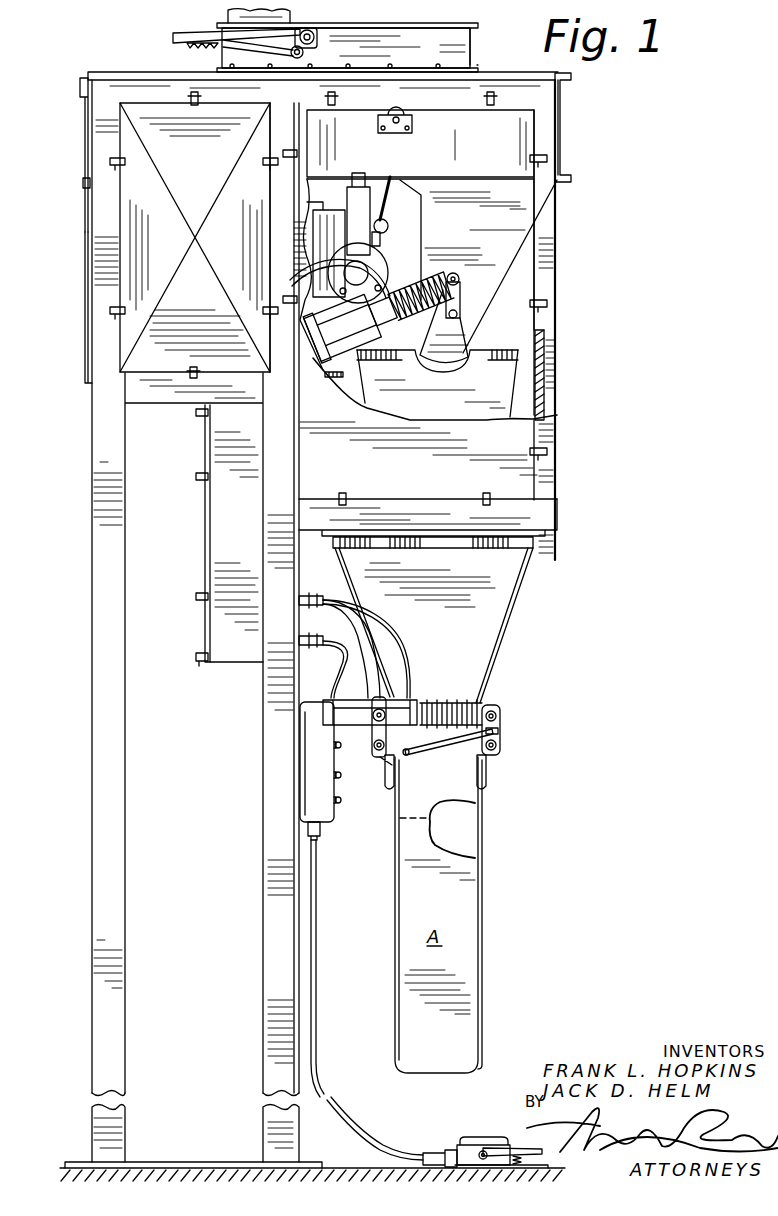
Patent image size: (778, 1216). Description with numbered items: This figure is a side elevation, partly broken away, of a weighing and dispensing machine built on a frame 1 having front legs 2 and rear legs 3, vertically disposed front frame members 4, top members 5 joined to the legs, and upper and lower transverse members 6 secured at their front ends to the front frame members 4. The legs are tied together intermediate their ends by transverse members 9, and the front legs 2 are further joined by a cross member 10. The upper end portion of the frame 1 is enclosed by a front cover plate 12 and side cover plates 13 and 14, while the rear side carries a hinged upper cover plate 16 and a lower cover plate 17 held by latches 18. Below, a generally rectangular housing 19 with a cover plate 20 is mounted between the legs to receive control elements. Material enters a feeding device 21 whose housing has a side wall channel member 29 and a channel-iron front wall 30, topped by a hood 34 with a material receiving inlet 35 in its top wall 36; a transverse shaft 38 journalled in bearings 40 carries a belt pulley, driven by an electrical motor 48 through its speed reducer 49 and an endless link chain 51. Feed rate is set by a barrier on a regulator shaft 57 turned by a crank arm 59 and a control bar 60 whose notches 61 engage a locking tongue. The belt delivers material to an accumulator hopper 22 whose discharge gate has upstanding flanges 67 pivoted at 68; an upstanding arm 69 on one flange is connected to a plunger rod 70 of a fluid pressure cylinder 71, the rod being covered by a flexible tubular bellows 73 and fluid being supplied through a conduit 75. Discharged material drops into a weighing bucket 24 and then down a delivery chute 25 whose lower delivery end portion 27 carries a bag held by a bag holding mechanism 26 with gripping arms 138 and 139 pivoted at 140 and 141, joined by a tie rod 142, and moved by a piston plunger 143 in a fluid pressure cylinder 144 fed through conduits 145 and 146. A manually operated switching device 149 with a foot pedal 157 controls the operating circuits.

The frame 1 is at (349, 586).
The front legs 2 is at (325, 931).
The rear legs 3 is at (193, 815).
The front frame members 4 is at (569, 305).
The top member 5 is at (323, 65).
The transverse members 6 is at (449, 517).
The transverse members 9 is at (212, 767).
The cross member 10 is at (330, 394).
The front cover plate 12 is at (568, 375).
The side cover plate 13 is at (428, 460).
The side cover plate 14 is at (195, 237).
The upper cover plate 16 is at (76, 155).
The lower cover plate 17 is at (76, 307).
The latches 18 is at (323, 381).
The housing 19 is at (211, 533).
The cover plate 20 is at (183, 533).
The feeding device 21 is at (372, 44).
The accumulator hopper 22 is at (446, 297).
The weighing bucket 24 is at (435, 400).
The delivery chute 25 is at (442, 620).
The bag holding mechanism 26 is at (527, 729).
The lower delivery end portion 27 is at (463, 915).
The side wall channel member 29 is at (420, 144).
The front wall 30 is at (584, 127).
The hood 34 is at (346, 48).
The material receiving inlet 35 is at (231, 15).
The top wall 36 is at (347, 35).
The transverse shaft 38 is at (395, 112).
The bearings 40 is at (397, 142).
The electrical motor 48 is at (364, 240).
The speed reducer 49 is at (371, 238).
The endless link chain 51 is at (393, 211).
The regulator shaft 57 is at (315, 23).
The crank arm 59 is at (314, 56).
The control bar 60 is at (223, 39).
The notches 61 is at (182, 54).
The upstanding flanges 67 is at (464, 326).
The pivot 68 is at (479, 315).
The upstanding arm 69 is at (480, 300).
The plunger rod 70 is at (462, 260).
The fluid pressure cylinder 71 is at (352, 323).
The flexible tubular bellows 73 is at (421, 277).
The conduit 75 is at (314, 278).
The gripping arm 138 is at (512, 772).
The gripping arm 139 is at (372, 783).
The pivot 140 is at (518, 739).
The pivot 141 is at (361, 727).
The tie rod 142 is at (448, 757).
The piston plunger 143 is at (482, 703).
The fluid pressure cylinder 144 is at (317, 713).
The conduit 145 is at (323, 665).
The conduit 146 is at (375, 645).
The manually operated switching device 149 is at (485, 1140).
The foot pedal 157 is at (510, 1138).